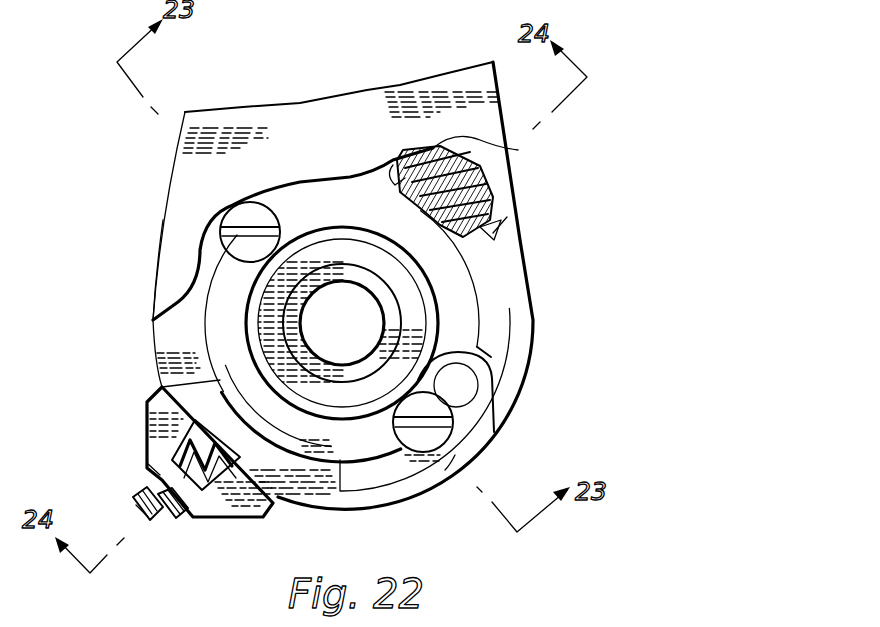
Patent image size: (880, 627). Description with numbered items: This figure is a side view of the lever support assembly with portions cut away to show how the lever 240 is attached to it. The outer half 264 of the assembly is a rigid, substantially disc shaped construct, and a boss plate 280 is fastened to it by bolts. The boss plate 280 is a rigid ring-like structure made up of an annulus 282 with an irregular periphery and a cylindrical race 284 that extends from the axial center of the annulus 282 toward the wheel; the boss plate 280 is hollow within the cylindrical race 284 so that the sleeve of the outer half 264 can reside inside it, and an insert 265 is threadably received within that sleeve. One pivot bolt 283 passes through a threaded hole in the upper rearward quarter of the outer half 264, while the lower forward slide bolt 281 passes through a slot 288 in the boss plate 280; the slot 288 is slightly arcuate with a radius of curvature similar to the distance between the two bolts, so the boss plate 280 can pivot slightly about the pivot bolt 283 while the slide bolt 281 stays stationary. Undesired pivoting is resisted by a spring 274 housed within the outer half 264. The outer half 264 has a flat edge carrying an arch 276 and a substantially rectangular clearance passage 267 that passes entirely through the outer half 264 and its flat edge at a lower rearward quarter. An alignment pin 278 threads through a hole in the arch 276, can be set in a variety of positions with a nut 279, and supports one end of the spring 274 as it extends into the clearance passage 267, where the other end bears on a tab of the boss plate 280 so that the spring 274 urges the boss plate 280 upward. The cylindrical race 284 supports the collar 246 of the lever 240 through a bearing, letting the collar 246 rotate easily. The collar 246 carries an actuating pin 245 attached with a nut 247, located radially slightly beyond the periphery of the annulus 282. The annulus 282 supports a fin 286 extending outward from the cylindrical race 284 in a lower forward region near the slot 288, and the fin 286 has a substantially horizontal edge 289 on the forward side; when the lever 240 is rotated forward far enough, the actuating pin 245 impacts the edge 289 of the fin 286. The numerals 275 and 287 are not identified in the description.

The lever 240 is at (346, 150).
The pivot bolt 283 is at (242, 218).
The collar 246 is at (163, 245).
The outer half 264 is at (165, 337).
The clearance passage 267 is at (160, 380).
The bracket 275 is at (147, 415).
The spring 274 is at (178, 453).
The arch 276 is at (147, 463).
The alignment pin 278 is at (143, 502).
The nut 279 is at (173, 518).
The boss plate 280 is at (317, 443).
The slide bolt 281 is at (421, 442).
The cylindrical race 284 is at (430, 280).
The annulus 282 is at (480, 298).
The insert 265 is at (400, 327).
The edge 289 is at (494, 358).
The slot 288 is at (457, 385).
The screw 287 is at (465, 428).
The fin 286 is at (455, 455).
The nut 247 is at (440, 144).
The actuating pin 245 is at (480, 227).